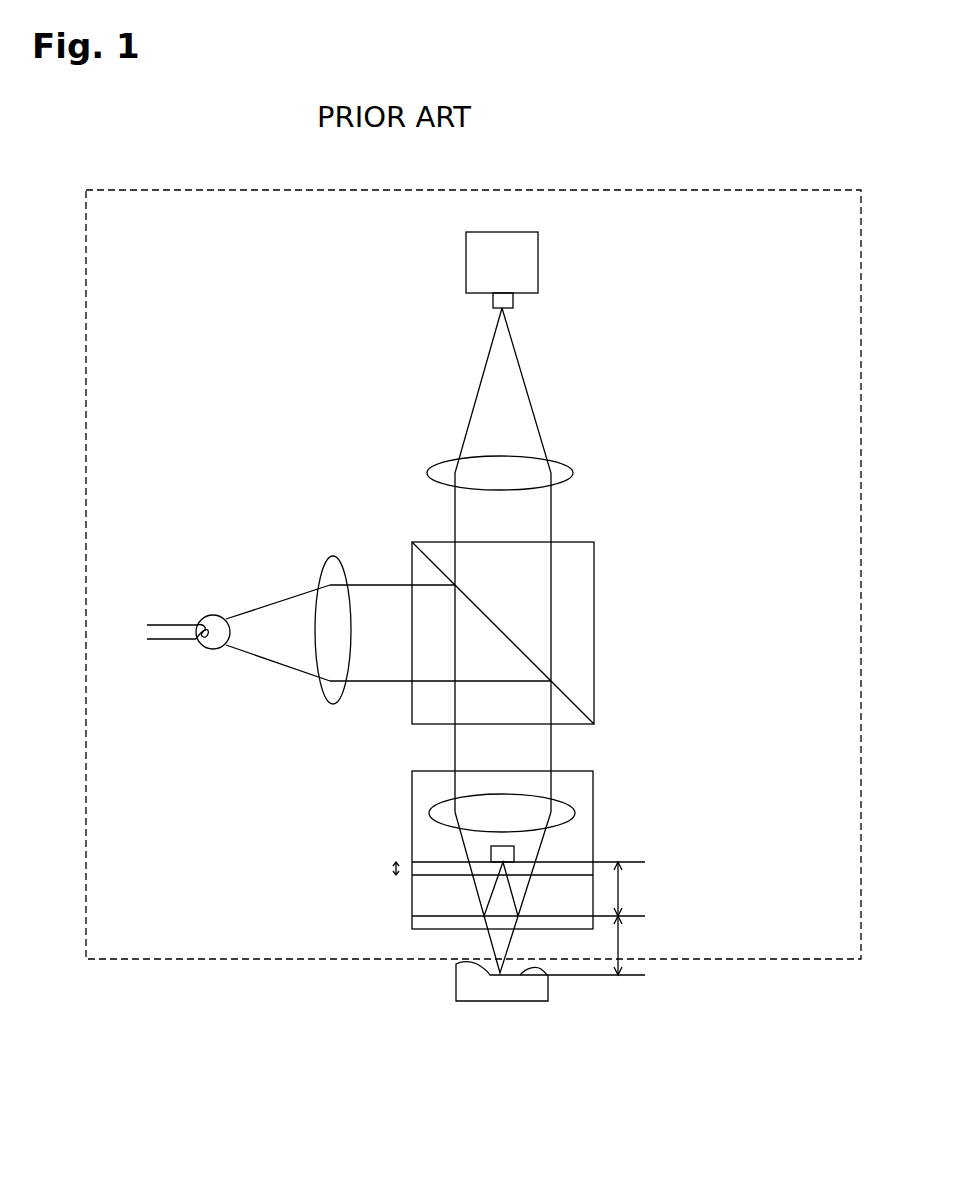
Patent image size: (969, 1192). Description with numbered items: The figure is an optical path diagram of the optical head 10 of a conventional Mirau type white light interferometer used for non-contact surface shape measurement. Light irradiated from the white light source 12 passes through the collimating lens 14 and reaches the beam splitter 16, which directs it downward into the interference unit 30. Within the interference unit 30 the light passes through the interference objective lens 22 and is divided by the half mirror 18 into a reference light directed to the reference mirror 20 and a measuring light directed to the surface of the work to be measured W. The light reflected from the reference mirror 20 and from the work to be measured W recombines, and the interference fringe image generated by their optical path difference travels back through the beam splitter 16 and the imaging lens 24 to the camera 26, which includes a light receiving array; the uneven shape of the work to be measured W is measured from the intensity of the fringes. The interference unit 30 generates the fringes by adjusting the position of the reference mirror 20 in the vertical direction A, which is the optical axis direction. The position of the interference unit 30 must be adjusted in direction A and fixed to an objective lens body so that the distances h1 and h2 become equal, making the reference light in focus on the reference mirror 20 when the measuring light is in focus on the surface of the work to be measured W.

The white light interferometer optical head 10 is at (110, 188).
The white light source 12 is at (213, 615).
The collimating lens 14 is at (328, 700).
The beam splitter 16 is at (592, 541).
The half mirror 18 is at (412, 920).
The reference mirror 20 is at (515, 853).
The interference objective lens 22 is at (575, 812).
The imaging lens 24 is at (573, 473).
The camera 26 is at (538, 262).
The interference unit 30 is at (412, 818).
The optical axis direction A is at (381, 875).
The distance h1 is at (631, 889).
The distance h2 is at (584, 945).
The work to be measured W is at (478, 1001).